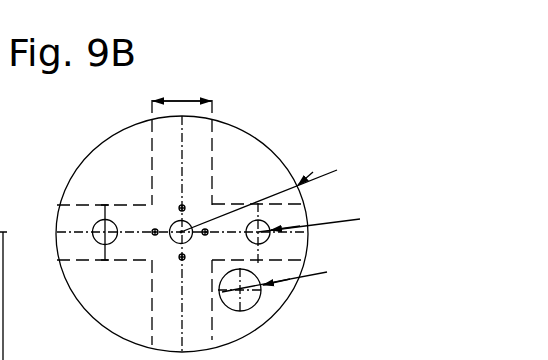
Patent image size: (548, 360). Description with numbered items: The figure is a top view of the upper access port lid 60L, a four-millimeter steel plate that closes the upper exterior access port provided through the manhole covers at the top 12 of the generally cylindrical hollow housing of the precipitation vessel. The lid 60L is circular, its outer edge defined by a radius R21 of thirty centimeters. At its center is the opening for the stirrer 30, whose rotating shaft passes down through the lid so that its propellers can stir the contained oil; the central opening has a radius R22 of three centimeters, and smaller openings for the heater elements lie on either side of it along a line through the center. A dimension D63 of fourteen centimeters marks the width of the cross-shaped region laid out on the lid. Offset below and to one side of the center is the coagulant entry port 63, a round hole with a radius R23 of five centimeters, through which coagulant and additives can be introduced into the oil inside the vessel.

The top 12 is at (145, 320).
The upper access port lid 60L is at (121, 152).
The dimension D63 is at (182, 101).
The stirrer 30 is at (188, 217).
The radius R21 is at (313, 172).
The radius R22 is at (381, 207).
The coagulant entry port 63 is at (233, 298).
The radius R23 is at (327, 272).